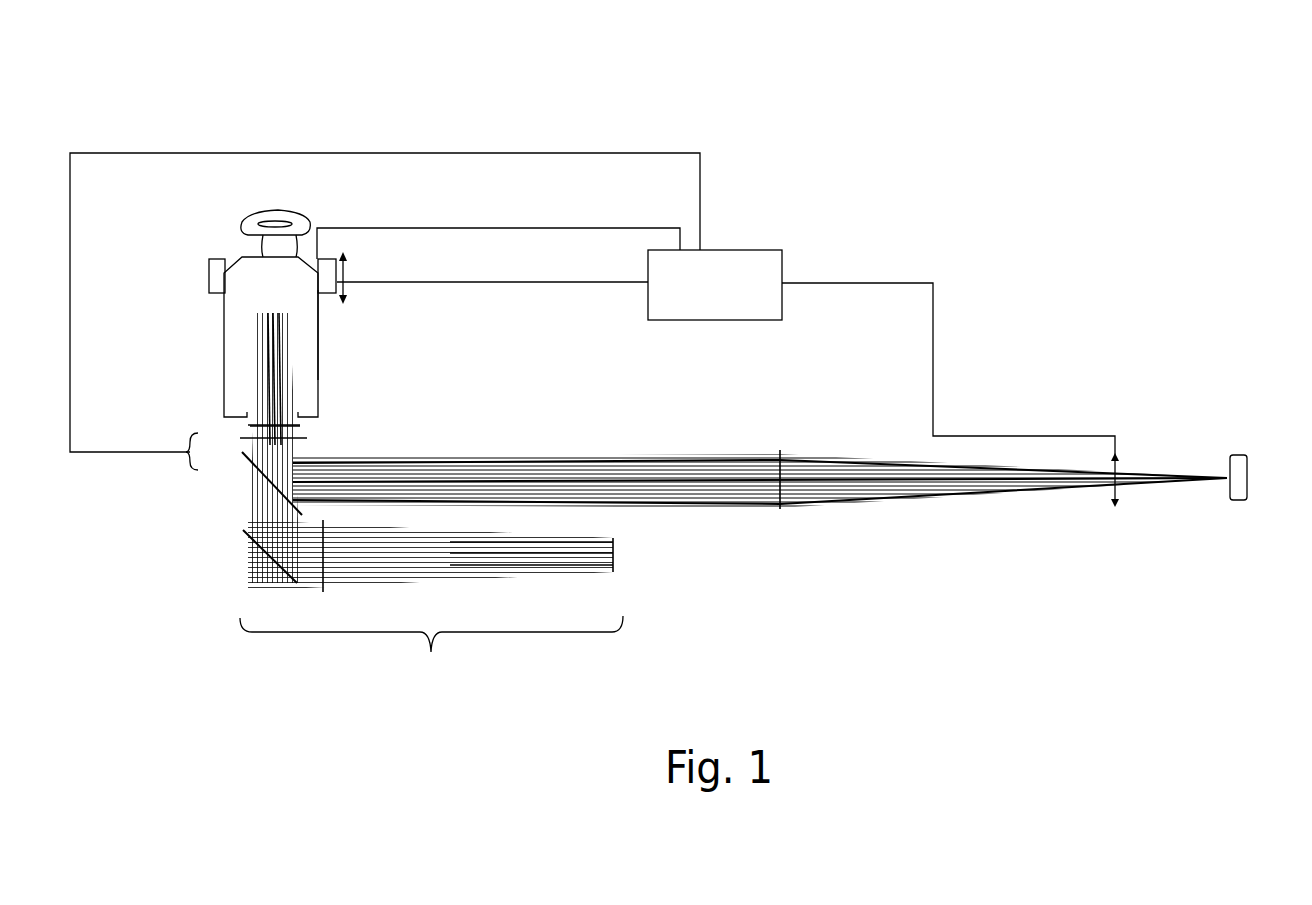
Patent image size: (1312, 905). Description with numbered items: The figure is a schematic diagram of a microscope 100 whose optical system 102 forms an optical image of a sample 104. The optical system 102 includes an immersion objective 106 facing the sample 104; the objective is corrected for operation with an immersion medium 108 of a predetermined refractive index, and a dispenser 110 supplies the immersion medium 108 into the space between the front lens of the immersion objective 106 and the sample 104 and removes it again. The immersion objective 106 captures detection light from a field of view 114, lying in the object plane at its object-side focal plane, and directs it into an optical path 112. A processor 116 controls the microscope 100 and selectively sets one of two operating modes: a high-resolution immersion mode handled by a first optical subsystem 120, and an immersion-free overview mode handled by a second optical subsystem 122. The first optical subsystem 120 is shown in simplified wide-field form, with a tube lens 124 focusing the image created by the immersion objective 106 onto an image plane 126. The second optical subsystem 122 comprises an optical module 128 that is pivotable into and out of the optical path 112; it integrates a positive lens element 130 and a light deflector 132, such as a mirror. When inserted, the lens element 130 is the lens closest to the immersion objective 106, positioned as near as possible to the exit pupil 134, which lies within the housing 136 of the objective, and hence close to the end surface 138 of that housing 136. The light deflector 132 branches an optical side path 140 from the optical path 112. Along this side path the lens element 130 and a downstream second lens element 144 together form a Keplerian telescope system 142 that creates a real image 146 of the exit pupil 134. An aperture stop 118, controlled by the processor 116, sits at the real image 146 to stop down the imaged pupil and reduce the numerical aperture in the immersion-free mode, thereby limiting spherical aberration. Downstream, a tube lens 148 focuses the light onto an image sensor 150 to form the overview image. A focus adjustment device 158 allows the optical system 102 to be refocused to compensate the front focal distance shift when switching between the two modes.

The microscope 100 is at (1063, 140).
The optical system 102 is at (755, 197).
The sample 104 is at (310, 223).
The immersion objective 106 is at (320, 372).
The immersion medium 108 is at (257, 247).
The dispenser 110 is at (209, 284).
The optical path 112 is at (300, 430).
The field of view 114 is at (278, 222).
The processor 116 is at (782, 300).
The aperture stop 118 is at (1115, 505).
The first optical subsystem 120 is at (431, 601).
The second optical subsystem 122 is at (1072, 405).
The tube lens 124 is at (323, 592).
The image plane 126 is at (613, 555).
The optical module 128 is at (187, 470).
The lens element 130 is at (300, 447).
The light deflector 132 is at (267, 487).
The exit pupil 134 is at (270, 304).
The housing 136 is at (320, 333).
The end surface 138 is at (247, 427).
The optical side path 140 is at (600, 453).
The Keplerian telescope system 142 is at (708, 430).
The second lens element 144 is at (780, 510).
The real image of the exit pupil 146 is at (1097, 488).
The tube lens 148 is at (1165, 465).
The image sensor 150 is at (1217, 457).
The focus adjustment device 158 is at (347, 272).